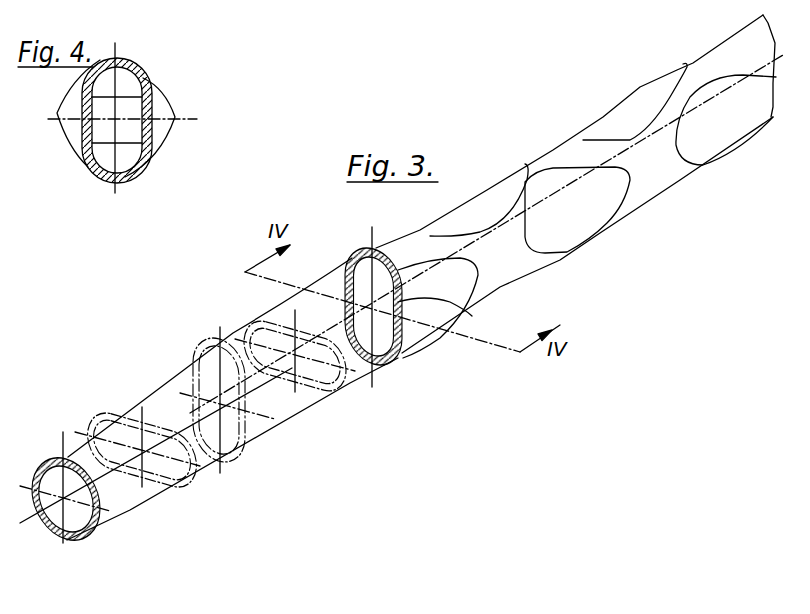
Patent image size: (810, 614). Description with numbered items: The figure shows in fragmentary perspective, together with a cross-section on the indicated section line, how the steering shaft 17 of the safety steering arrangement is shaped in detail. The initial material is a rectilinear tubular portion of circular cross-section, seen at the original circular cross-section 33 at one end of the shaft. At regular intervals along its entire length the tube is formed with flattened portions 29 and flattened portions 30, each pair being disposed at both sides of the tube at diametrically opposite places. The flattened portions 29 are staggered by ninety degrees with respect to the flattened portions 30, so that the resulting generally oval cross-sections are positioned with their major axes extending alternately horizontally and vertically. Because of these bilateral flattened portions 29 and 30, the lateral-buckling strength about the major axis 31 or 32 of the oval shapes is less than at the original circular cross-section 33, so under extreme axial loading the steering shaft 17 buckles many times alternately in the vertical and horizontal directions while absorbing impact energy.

In FIG. 4, the steering shaft 17 is at (162, 84).
In FIG. 3, the steering shaft 17 is at (558, 147).
In FIG. 3, the flattened portions 29 is at (303, 322).
In FIG. 4, the flattened portions 30 is at (150, 152).
In FIG. 3, the flattened portions 30 is at (340, 276).
In FIG. 4, the major axis 31 is at (117, 129).
In FIG. 3, the major axis 31 is at (380, 357).
In FIG. 3, the major axis 32 is at (272, 343).
In FIG. 3, the original circular cross-section 33 is at (87, 528).